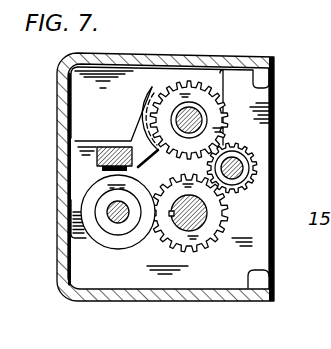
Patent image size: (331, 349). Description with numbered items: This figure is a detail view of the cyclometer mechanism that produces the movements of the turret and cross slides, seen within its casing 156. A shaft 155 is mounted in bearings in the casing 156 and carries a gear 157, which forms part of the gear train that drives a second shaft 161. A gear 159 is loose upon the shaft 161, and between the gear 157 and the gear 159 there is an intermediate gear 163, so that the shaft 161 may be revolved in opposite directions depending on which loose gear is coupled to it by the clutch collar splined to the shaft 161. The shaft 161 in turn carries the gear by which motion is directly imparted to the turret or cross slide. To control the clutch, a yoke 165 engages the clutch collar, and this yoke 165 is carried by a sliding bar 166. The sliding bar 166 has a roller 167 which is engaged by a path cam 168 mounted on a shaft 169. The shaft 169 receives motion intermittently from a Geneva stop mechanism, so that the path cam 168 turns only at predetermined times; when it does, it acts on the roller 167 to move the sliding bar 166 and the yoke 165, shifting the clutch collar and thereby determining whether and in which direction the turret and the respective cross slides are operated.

The shaft 155 is at (206, 215).
The casing 156 is at (165, 188).
The gear 157 is at (193, 241).
The gear 159 is at (215, 125).
The shaft 161 is at (207, 118).
The intermediate gear 163 is at (253, 179).
The yoke 165 is at (143, 122).
The sliding bar 166 is at (100, 159).
The roller 167 is at (107, 184).
The path cam 168 is at (103, 240).
The shaft 169 is at (117, 222).